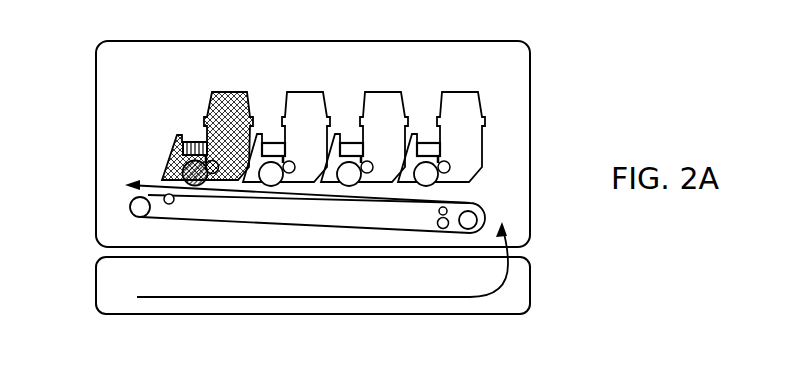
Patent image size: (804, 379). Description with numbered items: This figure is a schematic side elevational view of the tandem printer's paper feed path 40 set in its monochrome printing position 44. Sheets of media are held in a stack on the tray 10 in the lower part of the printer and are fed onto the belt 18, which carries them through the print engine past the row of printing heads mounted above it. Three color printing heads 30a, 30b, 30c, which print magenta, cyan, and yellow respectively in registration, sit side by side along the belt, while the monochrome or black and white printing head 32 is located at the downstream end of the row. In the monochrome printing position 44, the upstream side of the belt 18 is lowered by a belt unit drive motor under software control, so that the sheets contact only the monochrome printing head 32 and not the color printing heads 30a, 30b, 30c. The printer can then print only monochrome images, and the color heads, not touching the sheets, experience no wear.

The tray 10 is at (100, 313).
The belt 18 is at (315, 232).
The color printing head 30a is at (462, 119).
The color printing head 30b is at (385, 119).
The color printing head 30c is at (301, 97).
The monochrome printing head 32 is at (231, 94).
The paper feed path 40 is at (133, 210).
The monochrome printing position 44 is at (140, 165).